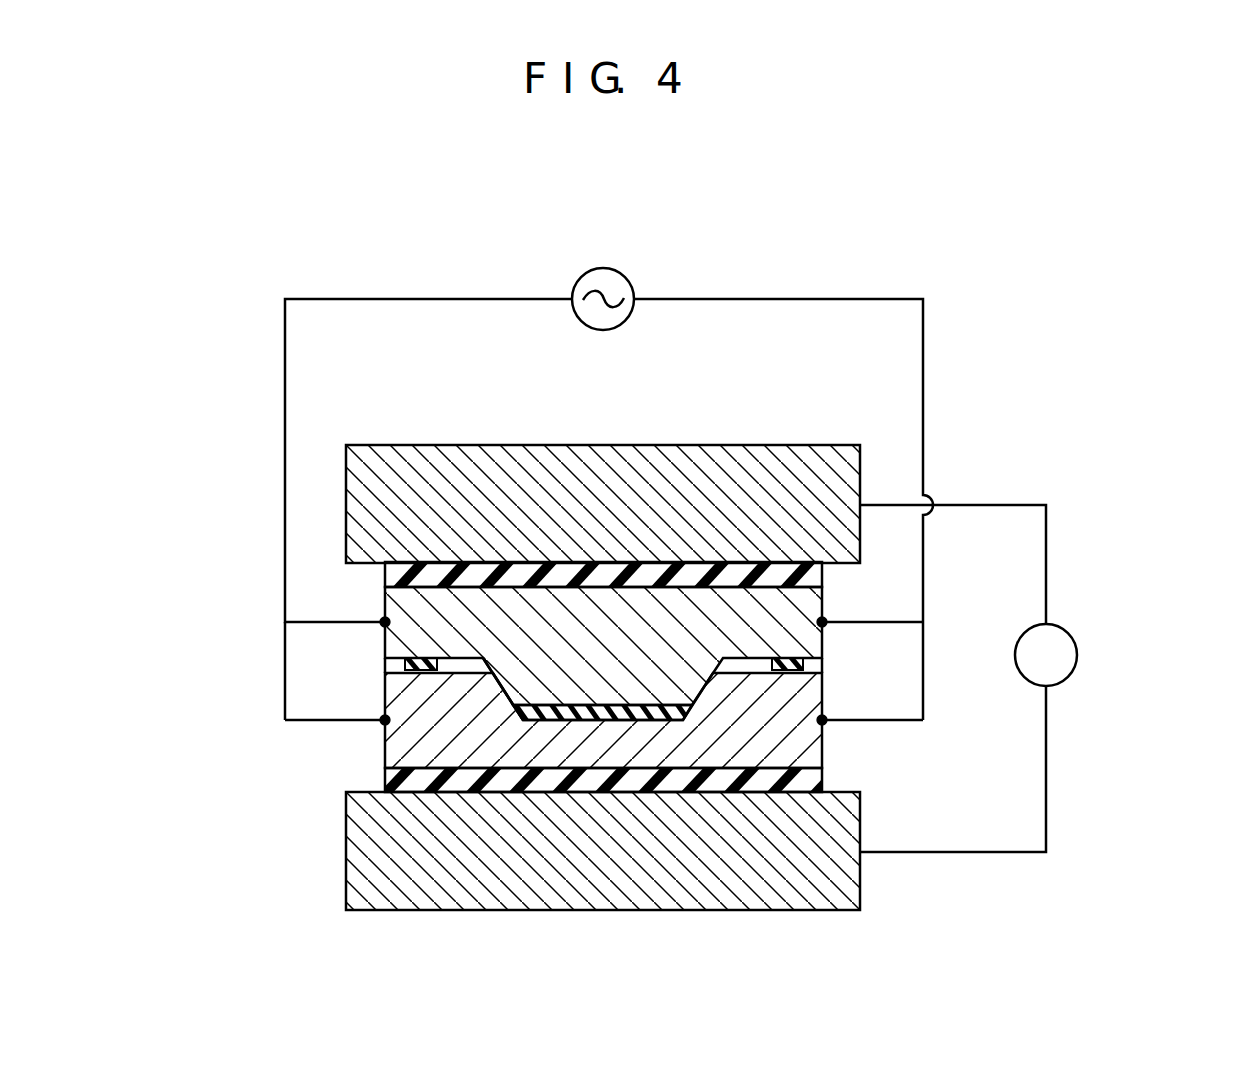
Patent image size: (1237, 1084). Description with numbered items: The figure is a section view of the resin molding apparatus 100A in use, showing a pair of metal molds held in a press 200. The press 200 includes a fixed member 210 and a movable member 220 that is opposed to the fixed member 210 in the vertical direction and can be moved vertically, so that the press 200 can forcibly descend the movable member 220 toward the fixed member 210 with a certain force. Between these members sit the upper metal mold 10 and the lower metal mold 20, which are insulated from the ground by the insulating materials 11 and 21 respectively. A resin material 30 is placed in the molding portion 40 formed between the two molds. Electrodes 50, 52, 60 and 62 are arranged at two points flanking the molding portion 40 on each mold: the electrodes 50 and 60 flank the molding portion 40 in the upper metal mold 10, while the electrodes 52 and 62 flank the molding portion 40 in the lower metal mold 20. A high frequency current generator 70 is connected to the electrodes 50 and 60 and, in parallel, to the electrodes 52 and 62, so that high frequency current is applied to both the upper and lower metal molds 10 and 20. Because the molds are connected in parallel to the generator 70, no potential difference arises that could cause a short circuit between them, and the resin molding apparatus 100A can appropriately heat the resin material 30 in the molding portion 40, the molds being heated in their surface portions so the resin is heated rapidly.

The upper metal mold 10 is at (823, 600).
The insulating material 11 is at (385, 576).
The lower metal mold 20 is at (823, 760).
The insulating material 21 is at (385, 778).
The resin material 30 is at (555, 708).
The molding portion 40 is at (622, 740).
The electrode 50 is at (383, 626).
The electrode 52 is at (383, 718).
The electrode 60 is at (822, 623).
The electrode 62 is at (822, 722).
The high frequency current generator 70 is at (634, 272).
The resin molding apparatus 100A is at (971, 468).
The press 200 is at (1072, 636).
The fixed member 210 is at (346, 868).
The movable member 220 is at (345, 482).